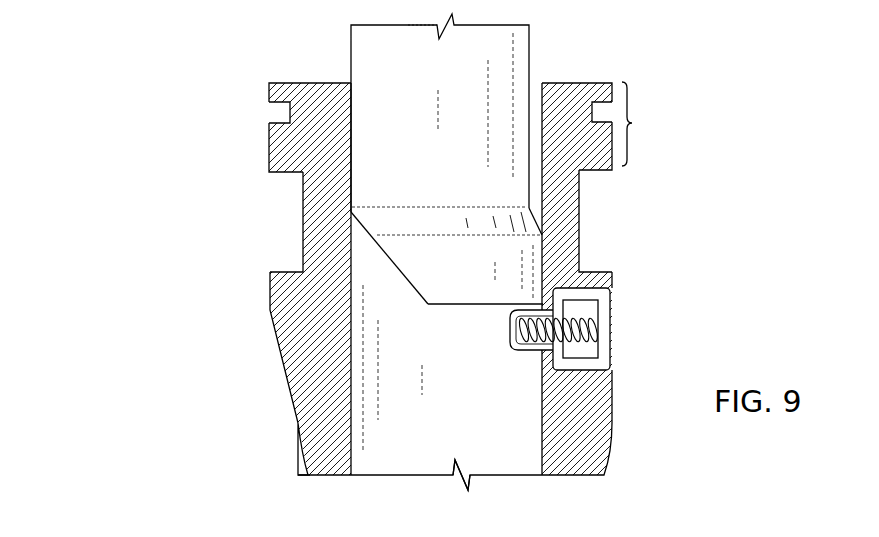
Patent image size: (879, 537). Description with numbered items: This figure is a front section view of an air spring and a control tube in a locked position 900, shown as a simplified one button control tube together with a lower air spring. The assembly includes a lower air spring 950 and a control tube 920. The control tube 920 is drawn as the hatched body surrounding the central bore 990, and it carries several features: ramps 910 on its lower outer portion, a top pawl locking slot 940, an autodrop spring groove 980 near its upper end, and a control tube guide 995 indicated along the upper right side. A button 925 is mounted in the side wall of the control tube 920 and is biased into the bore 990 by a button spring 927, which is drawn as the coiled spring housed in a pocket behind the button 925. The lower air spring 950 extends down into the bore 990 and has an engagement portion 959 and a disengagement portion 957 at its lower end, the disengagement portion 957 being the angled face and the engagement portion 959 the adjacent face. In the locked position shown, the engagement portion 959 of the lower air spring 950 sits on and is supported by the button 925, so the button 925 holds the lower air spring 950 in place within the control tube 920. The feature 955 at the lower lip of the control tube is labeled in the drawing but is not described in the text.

The air spring and control tube in a locked position 900 is at (153, 48).
The ramps 910 is at (278, 350).
The control tube 920 is at (278, 160).
The button 925 is at (509, 345).
The button spring 927 is at (598, 340).
The top pawl locking slot 940 is at (303, 225).
The lower air spring 950 is at (522, 53).
The lip 955 is at (297, 455).
The disengagement portion 957 is at (405, 275).
The engagement portion 959 is at (492, 300).
The autodrop spring groove 980 is at (287, 113).
The bore 990 is at (422, 442).
The control tube guide 995 is at (632, 123).